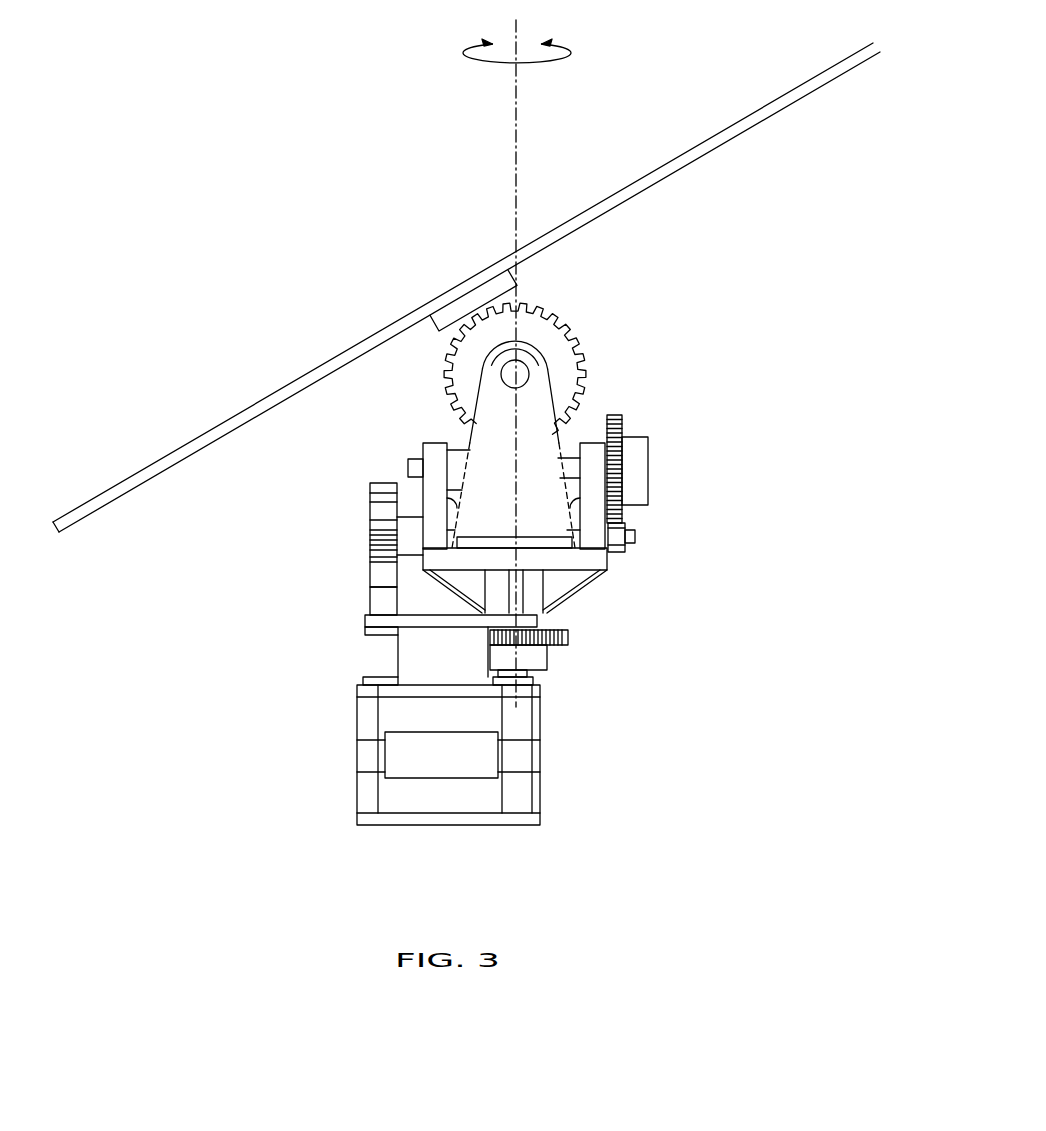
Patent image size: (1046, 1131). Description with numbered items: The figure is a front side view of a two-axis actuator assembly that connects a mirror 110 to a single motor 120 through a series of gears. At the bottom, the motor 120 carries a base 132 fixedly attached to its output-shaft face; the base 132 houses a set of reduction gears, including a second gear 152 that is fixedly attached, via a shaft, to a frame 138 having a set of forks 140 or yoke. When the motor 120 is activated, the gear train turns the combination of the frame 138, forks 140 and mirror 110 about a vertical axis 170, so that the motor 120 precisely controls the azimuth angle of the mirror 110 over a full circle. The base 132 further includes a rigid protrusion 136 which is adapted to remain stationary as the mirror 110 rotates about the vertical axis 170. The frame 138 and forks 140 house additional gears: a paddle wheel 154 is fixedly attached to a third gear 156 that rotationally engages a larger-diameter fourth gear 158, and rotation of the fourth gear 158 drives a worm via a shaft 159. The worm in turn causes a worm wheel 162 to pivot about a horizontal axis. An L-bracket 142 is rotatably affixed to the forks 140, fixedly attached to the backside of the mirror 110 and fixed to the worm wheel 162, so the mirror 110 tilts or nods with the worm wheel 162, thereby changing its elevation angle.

The mirror 110 is at (307, 375).
The motor 120 is at (542, 748).
The base 132 is at (395, 660).
The rigid protrusion 136 is at (372, 600).
The frame 138 is at (609, 570).
The forks 140 is at (492, 448).
The L-bracket 142 is at (512, 278).
The second gear 152 is at (565, 637).
The paddle wheel 154 is at (370, 522).
The third gear 156 is at (635, 536).
The fourth gear 158 is at (621, 420).
The shaft 159 is at (407, 467).
The worm wheel 162 is at (575, 343).
The vertical axis 170 is at (517, 120).